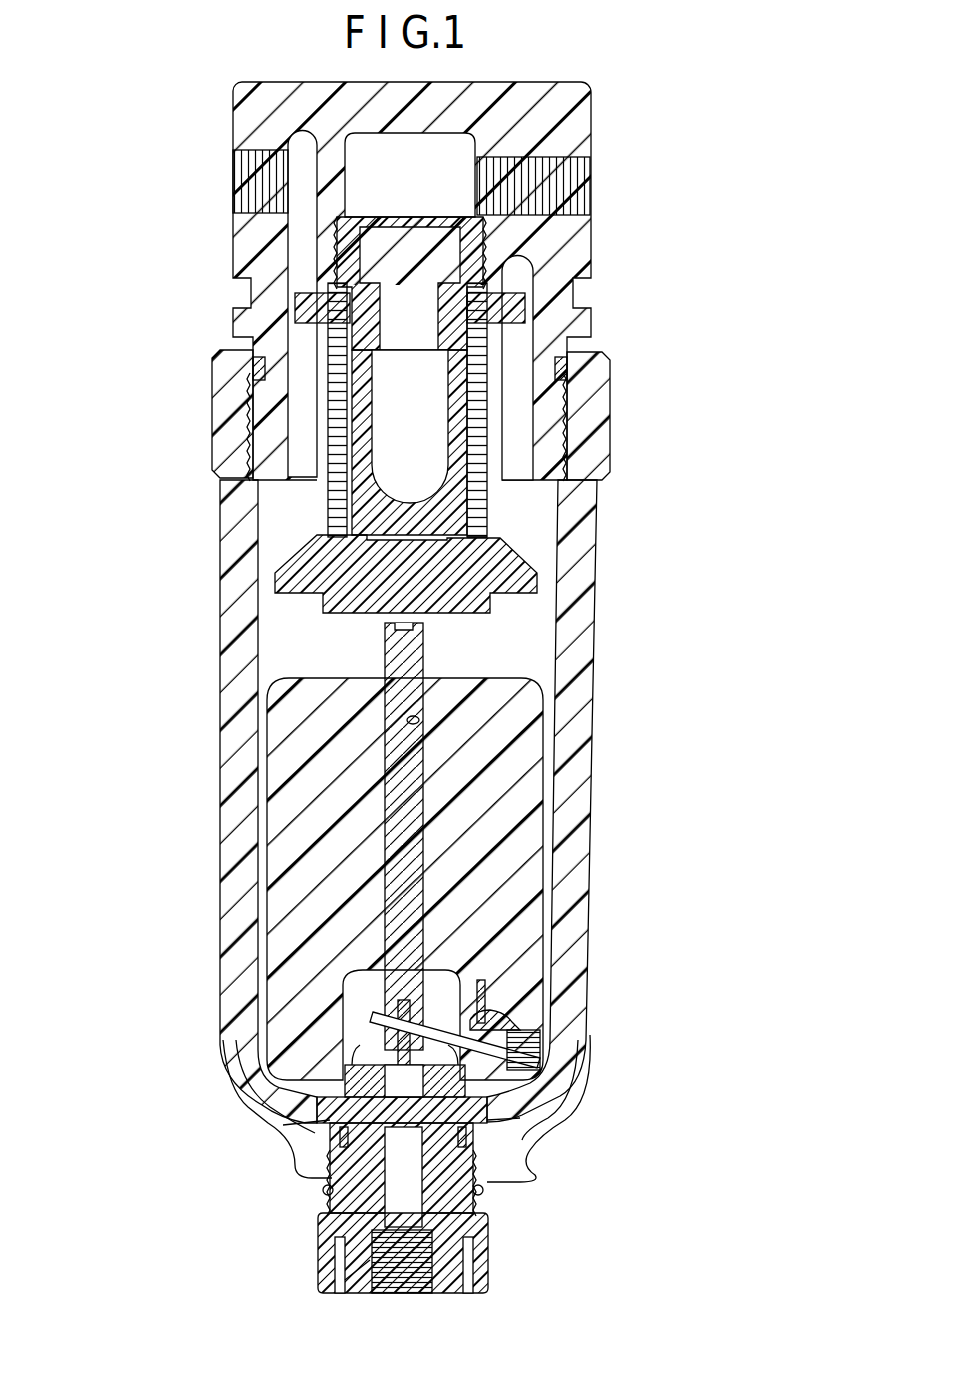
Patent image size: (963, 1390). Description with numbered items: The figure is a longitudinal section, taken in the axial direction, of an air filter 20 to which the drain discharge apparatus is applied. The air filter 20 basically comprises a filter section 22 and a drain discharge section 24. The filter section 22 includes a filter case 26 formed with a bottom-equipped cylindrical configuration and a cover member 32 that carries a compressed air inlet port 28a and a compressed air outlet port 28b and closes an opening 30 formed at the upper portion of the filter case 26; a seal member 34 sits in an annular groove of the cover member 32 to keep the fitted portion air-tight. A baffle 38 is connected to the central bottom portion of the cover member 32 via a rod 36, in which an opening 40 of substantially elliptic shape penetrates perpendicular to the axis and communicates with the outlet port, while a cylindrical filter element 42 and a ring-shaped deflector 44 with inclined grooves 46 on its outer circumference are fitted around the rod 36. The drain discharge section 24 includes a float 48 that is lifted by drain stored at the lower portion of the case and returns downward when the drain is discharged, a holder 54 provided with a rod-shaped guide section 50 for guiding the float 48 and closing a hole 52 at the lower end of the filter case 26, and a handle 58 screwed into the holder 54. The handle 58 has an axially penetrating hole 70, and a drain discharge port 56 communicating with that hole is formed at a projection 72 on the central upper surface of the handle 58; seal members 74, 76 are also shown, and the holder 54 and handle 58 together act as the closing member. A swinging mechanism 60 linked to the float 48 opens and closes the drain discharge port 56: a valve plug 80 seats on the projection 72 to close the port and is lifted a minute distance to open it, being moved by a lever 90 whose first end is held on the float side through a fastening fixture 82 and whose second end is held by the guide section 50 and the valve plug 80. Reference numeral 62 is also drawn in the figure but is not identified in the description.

The air filter 20 is at (686, 67).
The filter section 22 is at (535, 405).
The drain discharge section 24 is at (545, 873).
The filter case 26 is at (222, 912).
The compressed air inlet port 28a is at (253, 200).
The compressed air outlet port 28b is at (560, 203).
The opening 30 is at (557, 438).
The cover member 32 is at (401, 125).
The seal member 34 is at (258, 368).
The rod 36 is at (335, 400).
The baffle 38 is at (507, 582).
The opening 40 is at (380, 436).
The filter element 42 is at (490, 508).
The deflector 44 is at (560, 305).
The inclined grooves 46 is at (300, 300).
The float 48 is at (497, 780).
The guide section 50 is at (397, 800).
The hole 52 is at (480, 1168).
The holder 54 is at (440, 1108).
The drain discharge port 56 is at (403, 1120).
The handle 58 is at (357, 1267).
The swinging mechanism 60 is at (513, 1020).
The hole 62 is at (420, 720).
The hole 70 is at (340, 1207).
The projection 72 is at (440, 1120).
The seal member 74 is at (520, 1137).
The seal member 76 is at (325, 1190).
The valve plug 80 is at (375, 1040).
The fastening fixture 82 is at (547, 1045).
The lever 90 is at (480, 1017).